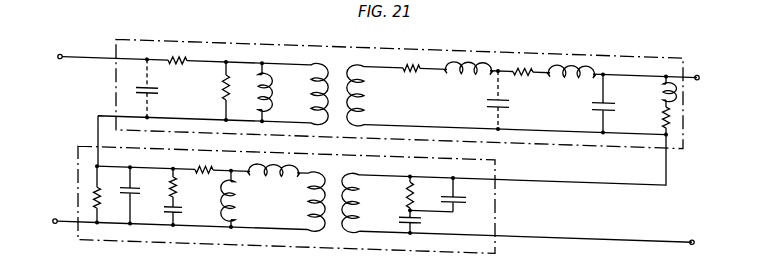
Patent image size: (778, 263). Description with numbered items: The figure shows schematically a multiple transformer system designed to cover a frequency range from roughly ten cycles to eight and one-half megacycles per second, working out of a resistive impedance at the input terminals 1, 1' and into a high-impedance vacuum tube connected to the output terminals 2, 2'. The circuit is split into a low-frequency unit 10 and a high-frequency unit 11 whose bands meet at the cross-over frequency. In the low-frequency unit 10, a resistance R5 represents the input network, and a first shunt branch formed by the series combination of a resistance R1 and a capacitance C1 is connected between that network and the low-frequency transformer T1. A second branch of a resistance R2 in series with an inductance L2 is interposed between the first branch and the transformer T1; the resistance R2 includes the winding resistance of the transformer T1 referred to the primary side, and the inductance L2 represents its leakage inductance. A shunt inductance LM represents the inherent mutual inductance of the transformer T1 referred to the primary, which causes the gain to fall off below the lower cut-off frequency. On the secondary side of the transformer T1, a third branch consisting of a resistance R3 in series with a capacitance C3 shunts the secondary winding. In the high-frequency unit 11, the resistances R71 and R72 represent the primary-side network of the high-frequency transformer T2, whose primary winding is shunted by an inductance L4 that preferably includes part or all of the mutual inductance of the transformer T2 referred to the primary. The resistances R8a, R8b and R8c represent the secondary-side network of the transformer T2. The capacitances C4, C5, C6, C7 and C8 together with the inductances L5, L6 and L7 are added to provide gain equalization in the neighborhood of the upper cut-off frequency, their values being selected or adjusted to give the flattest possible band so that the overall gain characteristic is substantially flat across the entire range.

The input terminal 1 is at (105, 58).
The input terminal 1' is at (66, 220).
The output terminal 2 is at (706, 77).
The output terminal 2' is at (703, 241).
The low-frequency unit 10 is at (186, 238).
The high-frequency unit 11 is at (199, 36).
The resistance R71 is at (170, 65).
The resistance R72 is at (219, 82).
The capacitance C4 is at (157, 88).
The inductance L4 is at (269, 82).
The high-frequency transformer T2 is at (337, 95).
The resistance R8a is at (393, 66).
The inductance L5 is at (450, 65).
The capacitance C5 is at (486, 99).
The resistance R8b is at (524, 50).
The inductance L6 is at (553, 66).
The capacitance C6 is at (593, 102).
The inductance L7 is at (658, 68).
The resistance R8c is at (672, 95).
The resistance R5 is at (101, 185).
The capacitance C7 is at (136, 195).
The resistance R1 is at (169, 178).
The capacitance C1 is at (181, 199).
The resistance R2 is at (210, 168).
The shunt inductance LM is at (252, 187).
The inductance L2 is at (284, 172).
The low-frequency transformer T1 is at (333, 202).
The resistance R3 is at (405, 184).
The capacitance C3 is at (403, 206).
The capacitance C8 is at (455, 190).